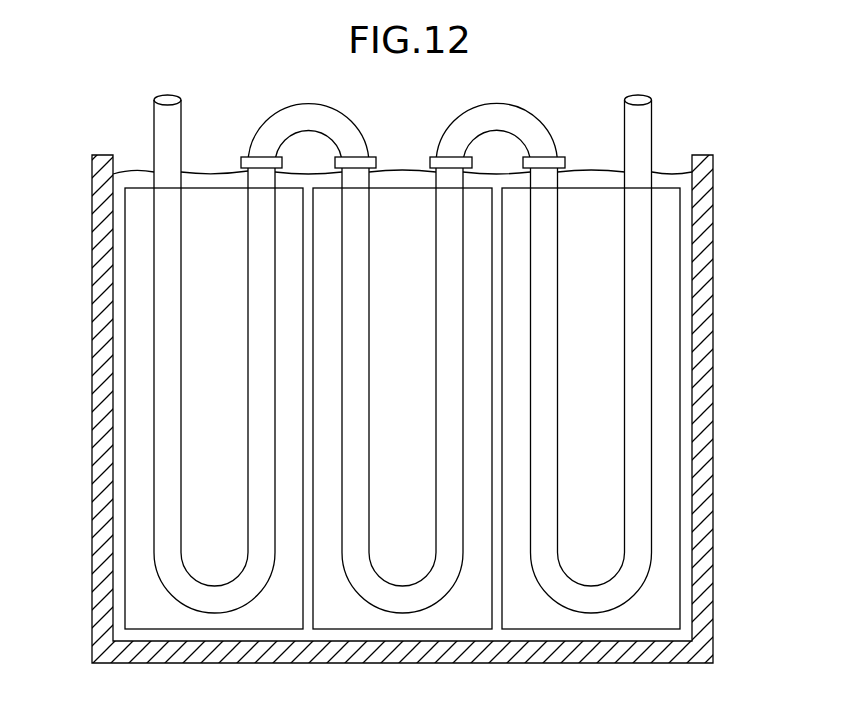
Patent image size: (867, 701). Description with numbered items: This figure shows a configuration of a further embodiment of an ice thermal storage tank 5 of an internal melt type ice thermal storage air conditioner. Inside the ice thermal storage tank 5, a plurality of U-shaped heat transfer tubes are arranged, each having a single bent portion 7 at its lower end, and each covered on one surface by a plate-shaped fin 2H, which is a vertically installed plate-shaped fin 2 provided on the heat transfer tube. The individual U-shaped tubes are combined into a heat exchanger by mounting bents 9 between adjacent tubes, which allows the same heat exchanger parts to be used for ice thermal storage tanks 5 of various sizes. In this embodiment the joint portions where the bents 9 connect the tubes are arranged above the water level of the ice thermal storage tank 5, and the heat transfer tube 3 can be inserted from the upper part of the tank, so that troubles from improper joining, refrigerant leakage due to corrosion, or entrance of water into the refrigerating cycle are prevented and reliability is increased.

The fin 2 is at (125, 477).
The plate-shaped fin 2H is at (675, 302).
The heat transfer tube 3 is at (125, 287).
The ice thermal storage tank 5 is at (708, 352).
The bent portion 7 is at (213, 598).
The bent 9 is at (309, 104).